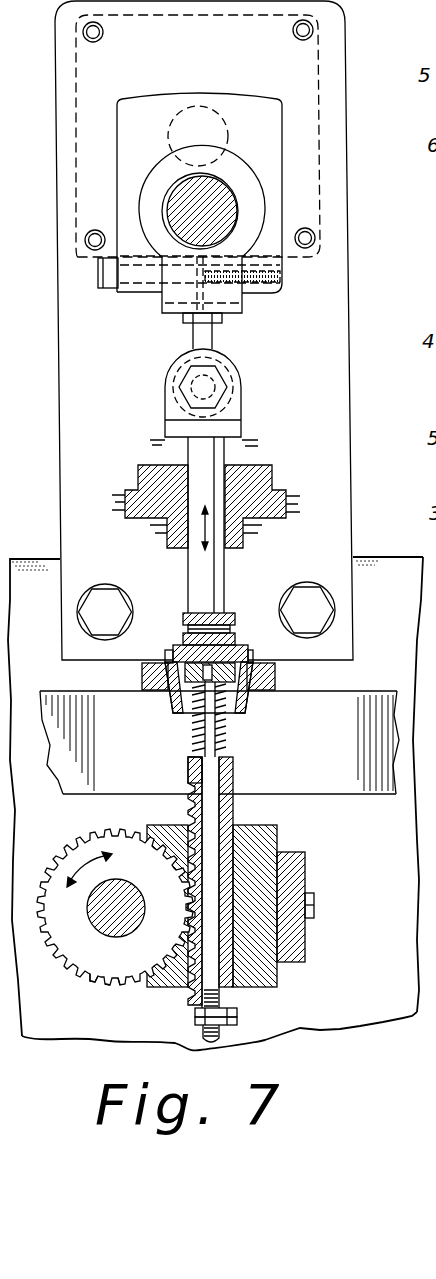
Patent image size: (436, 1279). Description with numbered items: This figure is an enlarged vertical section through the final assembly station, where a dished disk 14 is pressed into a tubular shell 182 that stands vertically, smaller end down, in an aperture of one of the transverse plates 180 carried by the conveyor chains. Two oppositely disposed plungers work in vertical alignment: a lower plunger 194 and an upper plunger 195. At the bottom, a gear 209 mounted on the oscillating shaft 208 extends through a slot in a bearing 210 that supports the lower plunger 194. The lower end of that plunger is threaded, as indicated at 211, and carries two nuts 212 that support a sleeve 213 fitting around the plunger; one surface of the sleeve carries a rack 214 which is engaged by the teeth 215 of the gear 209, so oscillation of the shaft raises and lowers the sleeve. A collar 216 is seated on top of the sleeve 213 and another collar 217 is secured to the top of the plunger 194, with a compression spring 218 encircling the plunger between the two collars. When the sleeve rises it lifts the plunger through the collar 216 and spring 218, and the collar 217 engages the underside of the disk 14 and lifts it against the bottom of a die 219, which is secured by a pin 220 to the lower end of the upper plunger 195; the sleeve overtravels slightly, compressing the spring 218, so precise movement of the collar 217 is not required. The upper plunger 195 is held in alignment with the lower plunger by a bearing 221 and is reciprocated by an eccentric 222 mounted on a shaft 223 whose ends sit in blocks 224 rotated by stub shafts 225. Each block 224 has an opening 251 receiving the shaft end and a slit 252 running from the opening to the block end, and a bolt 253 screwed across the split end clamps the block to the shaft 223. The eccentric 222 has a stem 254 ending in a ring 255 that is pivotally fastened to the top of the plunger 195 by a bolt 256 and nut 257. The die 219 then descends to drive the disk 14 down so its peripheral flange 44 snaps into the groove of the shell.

The disk 14 is at (234, 646).
The peripheral flange 44 is at (187, 675).
The plates 180 is at (275, 673).
The tubular shell 182 is at (248, 700).
The lower plunger 194 is at (213, 797).
The upper plunger 195 is at (210, 467).
The shaft 208 is at (102, 930).
The gear 209 is at (75, 965).
The bearing 210 is at (305, 955).
The threaded lower end 211 is at (200, 1035).
The nuts 212 is at (240, 1025).
The sleeve 213 is at (232, 873).
The rack 214 is at (192, 840).
The teeth 215 is at (113, 988).
The collar 216 is at (188, 770).
The collar 217 is at (183, 682).
The compression spring 218 is at (218, 747).
The die 219 is at (183, 648).
The pin 220 is at (237, 615).
The bearing 221 is at (245, 532).
The eccentric 222 is at (235, 170).
The shaft 223 is at (227, 207).
The blocks 224 is at (267, 167).
The stub shafts 225 is at (215, 123).
The opening 251 is at (168, 197).
The slit 252 is at (193, 300).
The bolt 253 is at (138, 278).
The stem 254 is at (210, 333).
The ring 255 is at (232, 368).
The bolt 256 is at (218, 383).
The nut 257 is at (220, 397).